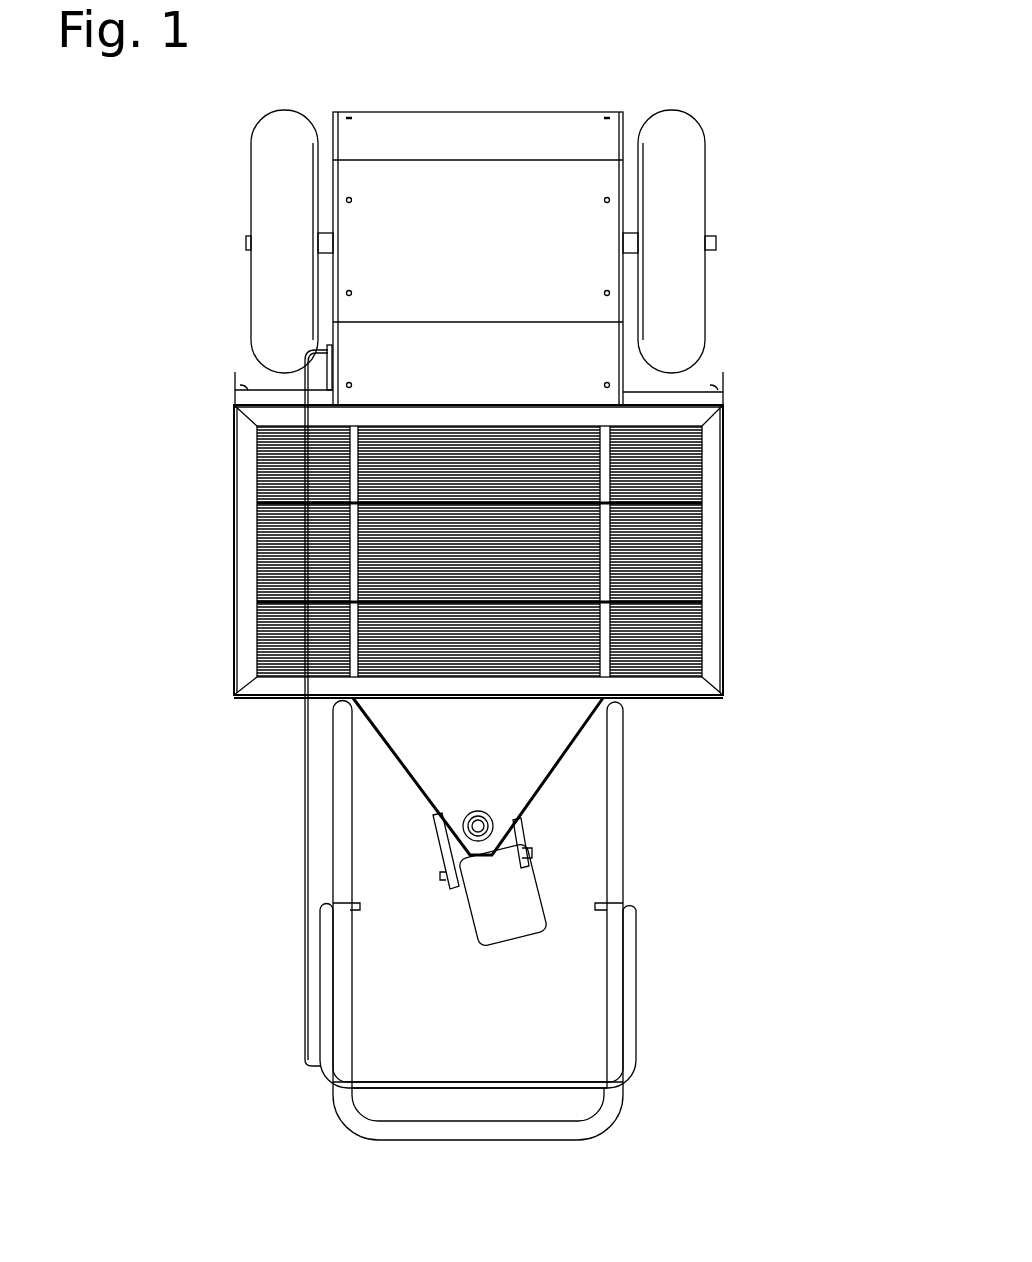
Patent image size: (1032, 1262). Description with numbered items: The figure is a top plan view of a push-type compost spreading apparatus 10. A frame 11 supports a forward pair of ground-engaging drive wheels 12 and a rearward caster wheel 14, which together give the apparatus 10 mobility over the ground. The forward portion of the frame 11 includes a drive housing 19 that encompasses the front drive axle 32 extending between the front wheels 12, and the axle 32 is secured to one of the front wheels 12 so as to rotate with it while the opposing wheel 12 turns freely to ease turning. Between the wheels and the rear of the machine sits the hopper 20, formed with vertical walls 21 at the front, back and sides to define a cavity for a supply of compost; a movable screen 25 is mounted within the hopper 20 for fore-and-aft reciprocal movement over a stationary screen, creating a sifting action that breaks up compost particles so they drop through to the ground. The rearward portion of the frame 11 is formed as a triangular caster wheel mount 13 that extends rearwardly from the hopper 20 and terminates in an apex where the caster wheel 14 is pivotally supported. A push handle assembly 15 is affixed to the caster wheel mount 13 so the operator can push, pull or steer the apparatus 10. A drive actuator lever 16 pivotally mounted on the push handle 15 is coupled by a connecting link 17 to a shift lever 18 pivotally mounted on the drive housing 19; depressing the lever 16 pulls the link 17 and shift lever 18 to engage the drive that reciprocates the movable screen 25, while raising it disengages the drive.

The compost spreading apparatus 10 is at (770, 86).
The frame 11 is at (680, 392).
The ground-engaging drive wheels 12 is at (258, 158).
The triangular caster wheel mount 13 is at (438, 740).
The caster wheel 14 is at (490, 940).
The push handle assembly 15 is at (613, 845).
The drive actuator lever 16 is at (637, 990).
The connecting link 17 is at (302, 905).
The shift lever 18 is at (313, 360).
The drive housing 19 is at (555, 128).
The hopper 20 is at (232, 530).
The vertical walls 21 is at (430, 410).
The movable screen 25 is at (275, 639).
The front drive axle 32 is at (716, 240).